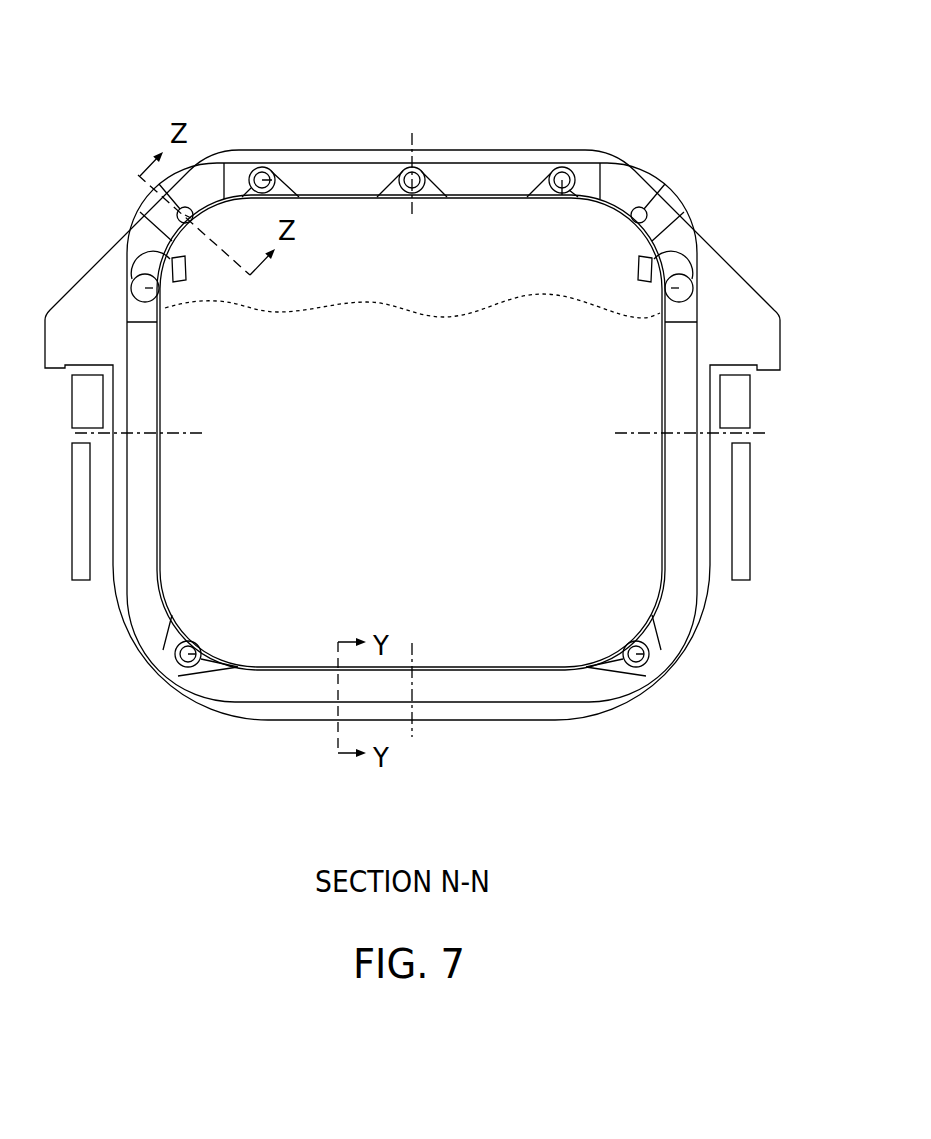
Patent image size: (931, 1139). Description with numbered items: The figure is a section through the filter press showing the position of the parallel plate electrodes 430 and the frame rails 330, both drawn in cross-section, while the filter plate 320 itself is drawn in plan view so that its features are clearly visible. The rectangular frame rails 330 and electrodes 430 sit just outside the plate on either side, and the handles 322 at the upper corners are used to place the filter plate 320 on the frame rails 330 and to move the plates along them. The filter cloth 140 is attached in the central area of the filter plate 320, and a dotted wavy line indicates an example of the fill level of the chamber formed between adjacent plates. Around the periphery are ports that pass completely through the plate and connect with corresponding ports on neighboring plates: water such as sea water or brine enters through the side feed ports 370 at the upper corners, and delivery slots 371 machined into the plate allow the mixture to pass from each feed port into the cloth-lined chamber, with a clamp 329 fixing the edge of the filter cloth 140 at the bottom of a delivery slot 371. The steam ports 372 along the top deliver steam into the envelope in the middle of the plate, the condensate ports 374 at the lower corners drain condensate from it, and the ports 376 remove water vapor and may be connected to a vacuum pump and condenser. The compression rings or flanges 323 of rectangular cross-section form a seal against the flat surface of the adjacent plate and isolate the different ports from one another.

The filter plate 320 is at (163, 55).
The handles 322 is at (752, 320).
The compression rings/flanges 323 is at (575, 163).
The clamp 329 is at (648, 214).
The frame rails 330 is at (742, 404).
The feed ports 370 is at (140, 288).
The delivery slots 371 is at (162, 264).
The steam ports 372 is at (400, 181).
The condensate ports 374 is at (184, 654).
The ports 376 is at (188, 208).
The electrodes 430 is at (78, 555).
The filter cloth 140 is at (257, 635).